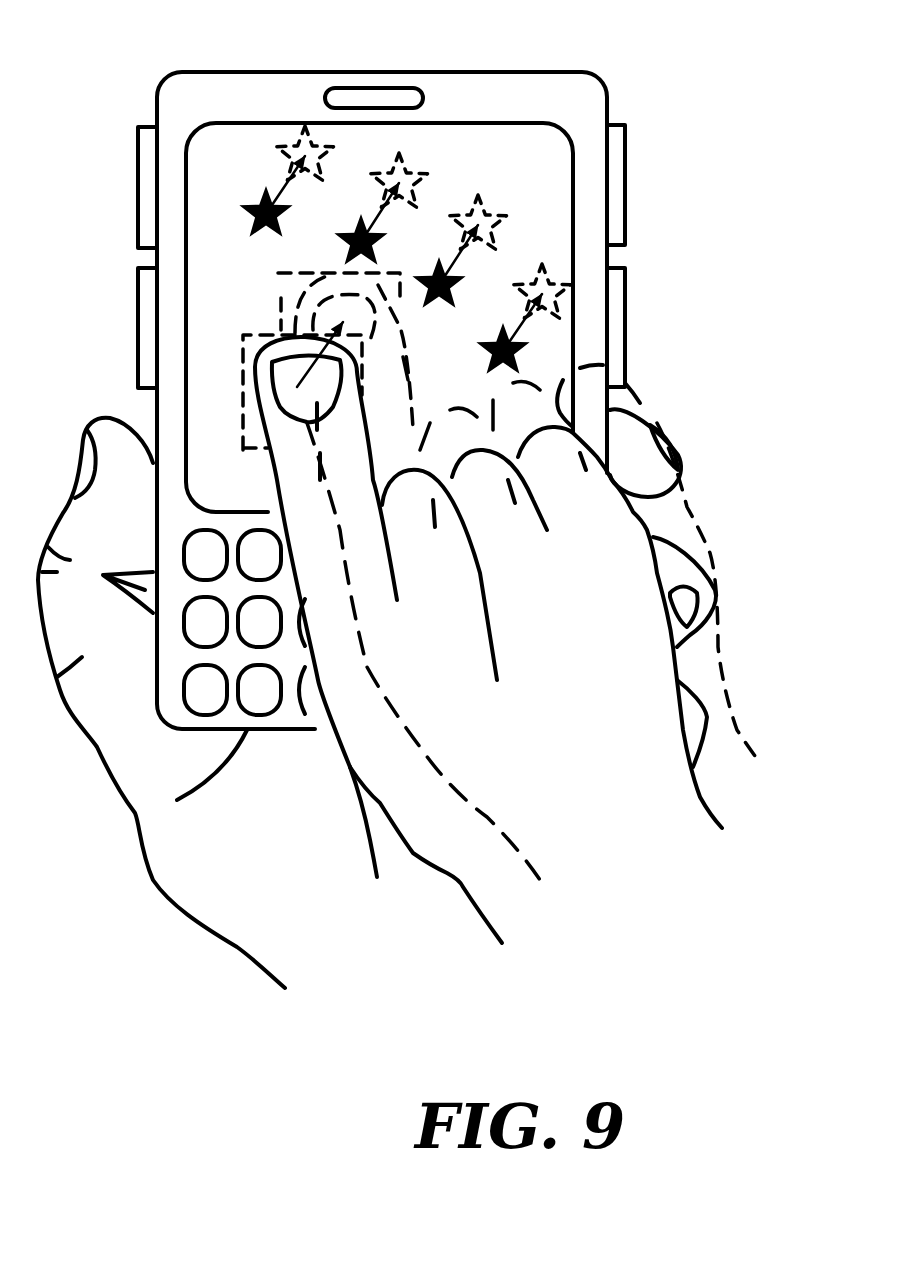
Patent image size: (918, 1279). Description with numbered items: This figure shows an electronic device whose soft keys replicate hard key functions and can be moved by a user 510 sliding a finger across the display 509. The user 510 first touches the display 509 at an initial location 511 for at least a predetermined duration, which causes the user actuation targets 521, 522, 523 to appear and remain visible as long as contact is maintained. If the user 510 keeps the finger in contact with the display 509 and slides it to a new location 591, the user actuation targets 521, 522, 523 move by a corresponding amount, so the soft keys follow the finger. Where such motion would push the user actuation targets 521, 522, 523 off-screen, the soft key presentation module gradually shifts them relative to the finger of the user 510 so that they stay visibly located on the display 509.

The display 509 is at (457, 123).
The user 510 is at (500, 697).
The initial location 511 is at (240, 365).
The user actuation target 521 is at (257, 200).
The user actuation target 522 is at (350, 230).
The user actuation target 523 is at (430, 267).
The new location 591 is at (281, 298).